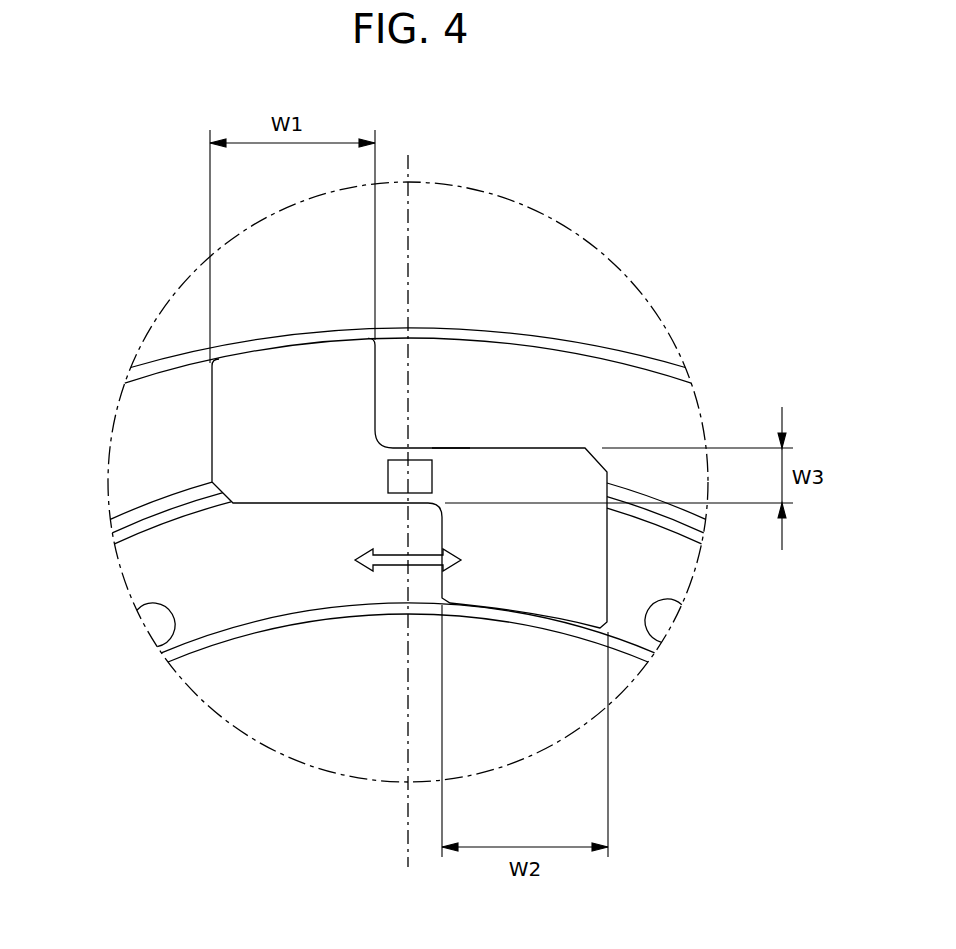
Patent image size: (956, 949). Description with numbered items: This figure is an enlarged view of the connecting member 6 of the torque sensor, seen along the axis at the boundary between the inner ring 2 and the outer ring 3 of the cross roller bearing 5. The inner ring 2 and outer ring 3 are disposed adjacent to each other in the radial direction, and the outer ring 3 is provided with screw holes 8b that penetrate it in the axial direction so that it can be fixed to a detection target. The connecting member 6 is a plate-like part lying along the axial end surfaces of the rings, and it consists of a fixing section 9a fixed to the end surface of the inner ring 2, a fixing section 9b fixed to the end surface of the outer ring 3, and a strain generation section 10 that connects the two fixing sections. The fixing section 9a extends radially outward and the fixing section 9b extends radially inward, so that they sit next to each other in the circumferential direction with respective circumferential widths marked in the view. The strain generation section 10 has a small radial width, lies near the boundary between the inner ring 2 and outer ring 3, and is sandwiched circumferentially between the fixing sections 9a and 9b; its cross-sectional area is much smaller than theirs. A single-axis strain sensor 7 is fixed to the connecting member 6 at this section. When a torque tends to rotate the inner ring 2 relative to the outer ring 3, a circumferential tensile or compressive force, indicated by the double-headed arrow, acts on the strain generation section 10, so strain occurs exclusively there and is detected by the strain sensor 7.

The inner ring 2 is at (373, 636).
The outer ring 3 is at (376, 398).
The cross roller bearing 5 is at (165, 358).
The connecting member 6 is at (478, 448).
The strain sensor 7 is at (388, 472).
The screw hole 8b is at (145, 622).
The fixing section 9a is at (513, 613).
The fixing section 9b is at (292, 346).
The strain generation section 10 is at (443, 463).